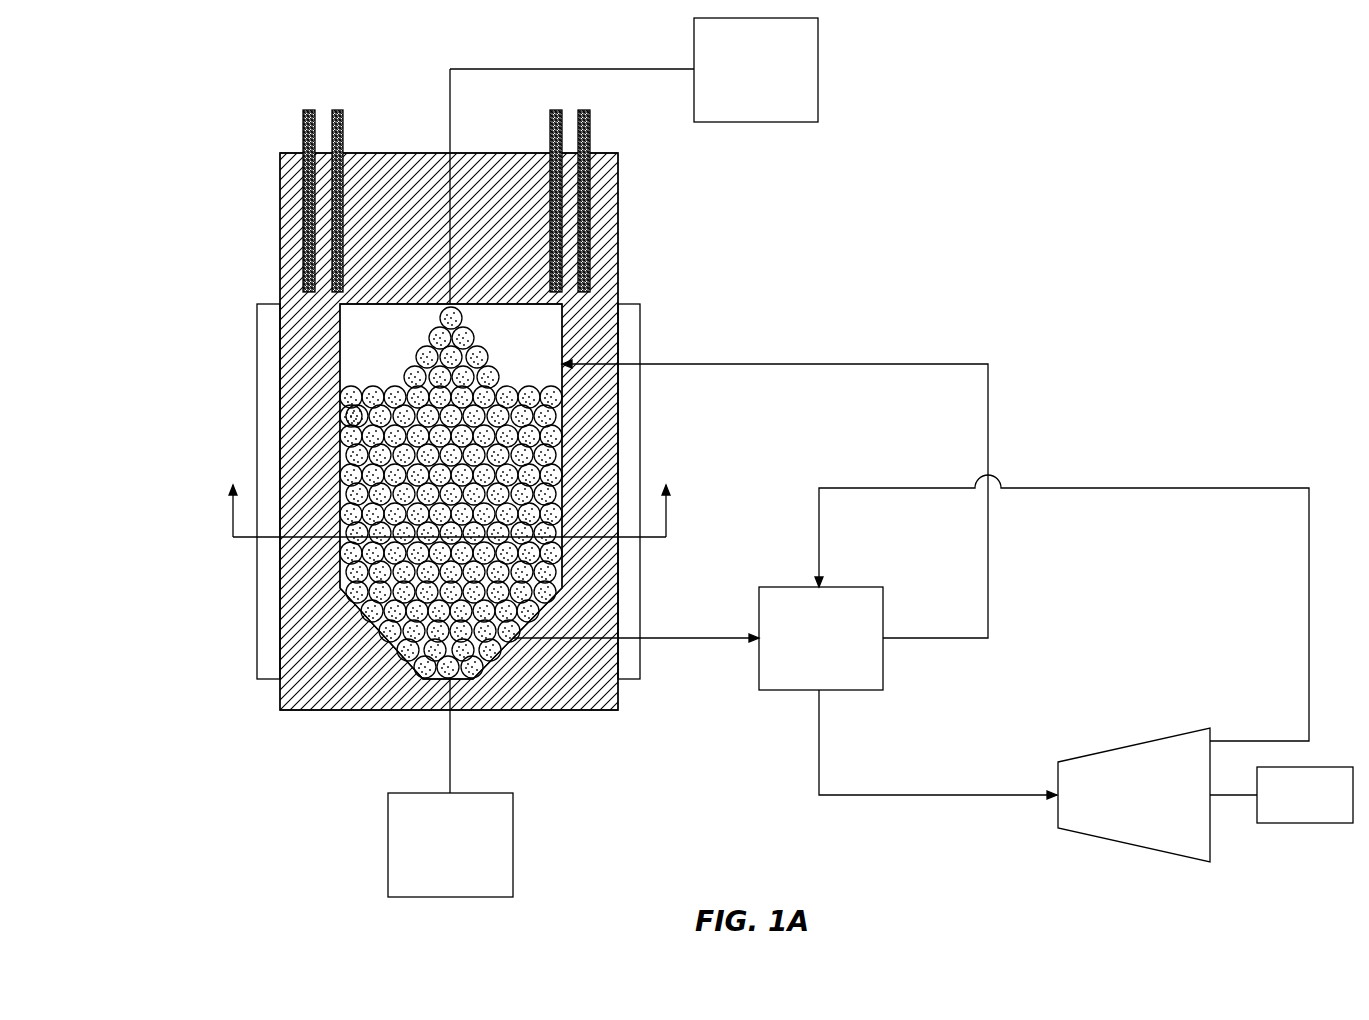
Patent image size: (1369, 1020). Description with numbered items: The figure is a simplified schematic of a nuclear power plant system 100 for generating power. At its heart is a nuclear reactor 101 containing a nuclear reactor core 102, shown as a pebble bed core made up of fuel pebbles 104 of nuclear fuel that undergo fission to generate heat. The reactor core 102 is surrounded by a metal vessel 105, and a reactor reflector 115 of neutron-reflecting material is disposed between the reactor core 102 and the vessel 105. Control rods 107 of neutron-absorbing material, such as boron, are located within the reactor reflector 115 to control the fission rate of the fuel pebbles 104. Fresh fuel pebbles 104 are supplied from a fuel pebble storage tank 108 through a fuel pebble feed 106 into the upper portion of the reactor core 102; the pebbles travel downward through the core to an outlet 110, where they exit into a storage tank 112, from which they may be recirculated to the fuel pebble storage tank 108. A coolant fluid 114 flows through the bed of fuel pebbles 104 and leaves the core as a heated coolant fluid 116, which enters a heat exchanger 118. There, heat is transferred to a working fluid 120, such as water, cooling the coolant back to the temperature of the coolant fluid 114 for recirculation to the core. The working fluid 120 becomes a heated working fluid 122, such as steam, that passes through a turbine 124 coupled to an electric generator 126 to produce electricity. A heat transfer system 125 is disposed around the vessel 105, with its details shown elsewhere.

The nuclear power plant system 100 is at (178, 174).
The nuclear reactor 101 is at (620, 331).
The nuclear reactor core 102 is at (562, 437).
The fuel pebbles 104 is at (337, 420).
The vessel 105 is at (278, 355).
The fuel pebble feed 106 is at (450, 110).
The control rods 107 is at (590, 205).
The fuel pebble storage tank 108 is at (634, 70).
The outlet 110 is at (450, 752).
The storage tank 112 is at (450, 845).
The coolant fluid 114 is at (834, 364).
The reactor reflector 115 is at (300, 650).
The heated coolant fluid 116 is at (673, 637).
The heat exchanger 118 is at (821, 638).
The working fluid 120 is at (812, 528).
The heated working fluid 122 is at (934, 797).
The turbine 124 is at (1134, 795).
The heat transfer system 125 is at (267, 443).
The electric generator 126 is at (1281, 795).